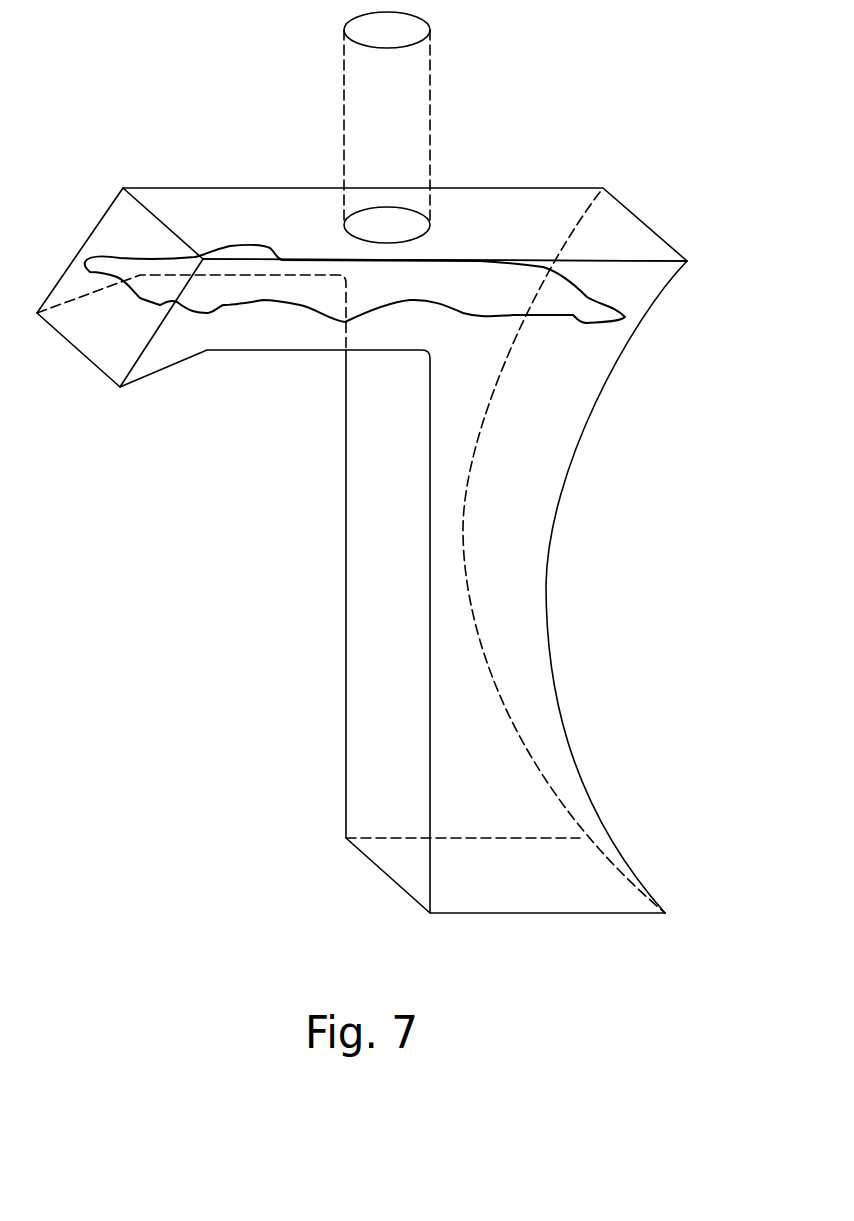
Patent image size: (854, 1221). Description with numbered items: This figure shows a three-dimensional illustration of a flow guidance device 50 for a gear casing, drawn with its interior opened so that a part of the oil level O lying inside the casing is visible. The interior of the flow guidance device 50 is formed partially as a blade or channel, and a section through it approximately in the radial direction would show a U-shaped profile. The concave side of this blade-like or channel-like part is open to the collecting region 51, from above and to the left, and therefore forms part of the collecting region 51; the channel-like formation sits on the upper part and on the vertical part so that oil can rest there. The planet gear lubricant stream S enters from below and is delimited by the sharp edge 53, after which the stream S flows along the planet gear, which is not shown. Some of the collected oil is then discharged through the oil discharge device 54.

The flow guidance device 50 is at (492, 915).
The collecting region 51 is at (385, 277).
The sharp edge 53 is at (120, 387).
The oil discharge device 54 is at (412, 82).
The oil level O is at (573, 307).
The planet gear lubricant stream S is at (301, 742).